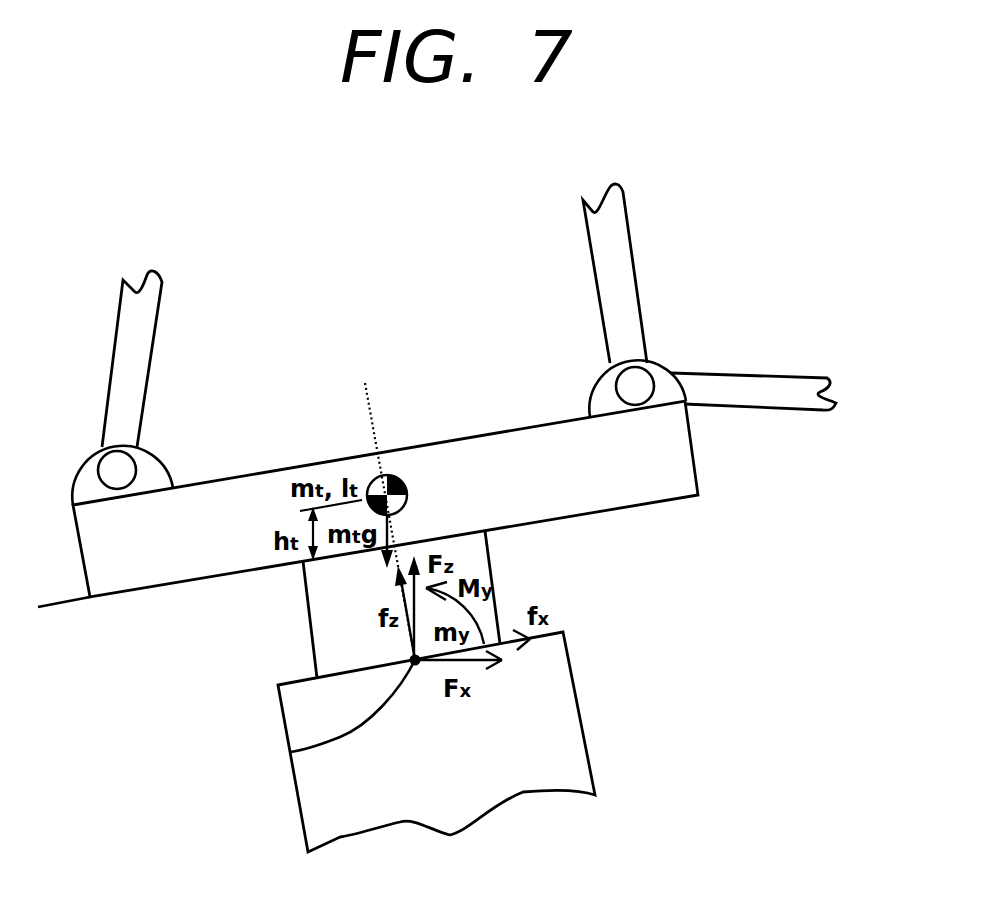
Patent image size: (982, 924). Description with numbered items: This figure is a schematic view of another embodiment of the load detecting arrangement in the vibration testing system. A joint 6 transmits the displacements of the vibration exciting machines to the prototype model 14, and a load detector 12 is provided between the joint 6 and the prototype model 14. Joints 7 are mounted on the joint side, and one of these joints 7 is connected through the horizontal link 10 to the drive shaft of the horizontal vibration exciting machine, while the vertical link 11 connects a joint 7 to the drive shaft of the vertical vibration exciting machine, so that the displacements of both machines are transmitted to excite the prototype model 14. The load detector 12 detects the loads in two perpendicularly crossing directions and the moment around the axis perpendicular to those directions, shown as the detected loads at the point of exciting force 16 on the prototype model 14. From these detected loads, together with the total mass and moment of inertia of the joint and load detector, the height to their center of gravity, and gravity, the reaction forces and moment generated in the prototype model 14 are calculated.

The joint 6 is at (648, 488).
The joints of the prototype model 7 is at (112, 463).
The horizontal link 10 is at (777, 382).
The vertical link 11 is at (620, 293).
The load detector 12 is at (337, 608).
The prototype model 14 is at (553, 767).
The point of exciting force 16 is at (290, 752).